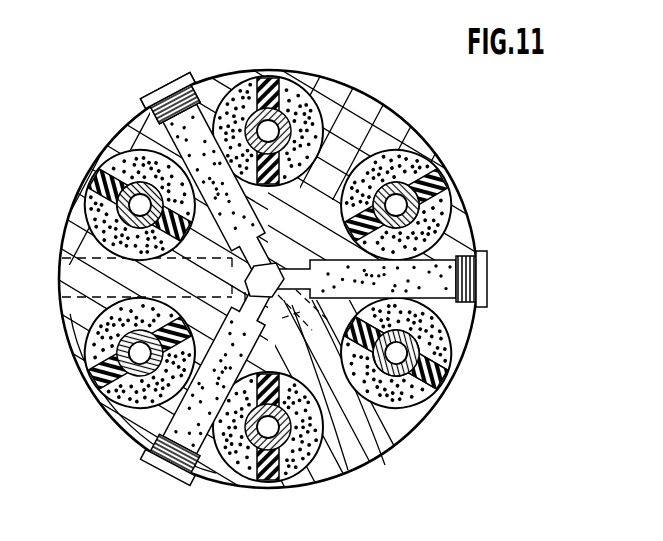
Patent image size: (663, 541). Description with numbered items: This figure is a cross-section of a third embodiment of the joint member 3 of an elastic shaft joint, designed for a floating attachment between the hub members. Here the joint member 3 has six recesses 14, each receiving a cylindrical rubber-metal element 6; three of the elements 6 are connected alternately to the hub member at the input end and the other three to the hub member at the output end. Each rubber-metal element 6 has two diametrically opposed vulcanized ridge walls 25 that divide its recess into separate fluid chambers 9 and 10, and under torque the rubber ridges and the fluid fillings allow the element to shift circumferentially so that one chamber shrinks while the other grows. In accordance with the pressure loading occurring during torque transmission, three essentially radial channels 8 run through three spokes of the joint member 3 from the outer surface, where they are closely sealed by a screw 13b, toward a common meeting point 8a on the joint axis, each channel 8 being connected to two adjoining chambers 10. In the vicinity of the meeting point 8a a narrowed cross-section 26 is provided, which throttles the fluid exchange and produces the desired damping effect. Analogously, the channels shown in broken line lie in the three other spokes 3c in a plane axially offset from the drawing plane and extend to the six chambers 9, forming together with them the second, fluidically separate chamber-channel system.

The joint member 3 is at (405, 142).
The spokes 3c is at (328, 100).
The rubber-metal elements 6 is at (100, 216).
The channel bores 8 is at (443, 281).
The meeting point 8a is at (170, 156).
The fluid chambers 9 is at (383, 153).
The fluid chambers 10 is at (437, 218).
The screw 13b is at (166, 82).
The recesses 14 is at (82, 212).
The ridge walls 25 is at (450, 380).
The narrowed cross-section 26 is at (370, 463).